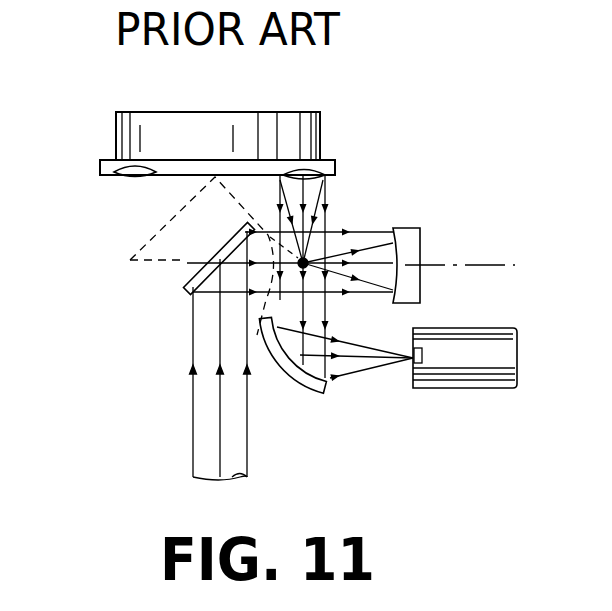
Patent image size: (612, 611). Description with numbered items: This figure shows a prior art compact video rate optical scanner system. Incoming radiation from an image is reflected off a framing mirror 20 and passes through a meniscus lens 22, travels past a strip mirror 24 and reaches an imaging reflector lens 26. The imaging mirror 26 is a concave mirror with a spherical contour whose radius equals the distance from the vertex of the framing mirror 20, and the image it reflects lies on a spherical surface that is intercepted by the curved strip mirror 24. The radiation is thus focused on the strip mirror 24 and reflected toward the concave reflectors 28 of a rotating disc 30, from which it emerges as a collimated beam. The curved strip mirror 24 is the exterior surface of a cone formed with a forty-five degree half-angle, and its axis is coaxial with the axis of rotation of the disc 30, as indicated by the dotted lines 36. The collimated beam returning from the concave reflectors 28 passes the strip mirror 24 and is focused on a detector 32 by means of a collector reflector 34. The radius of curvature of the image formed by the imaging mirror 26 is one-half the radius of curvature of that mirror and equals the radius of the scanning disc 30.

The framing mirror 20 is at (188, 290).
The meniscus lens 22 is at (268, 298).
The strip mirror 24 is at (318, 250).
The imaging reflector lens 26 is at (420, 238).
The concave reflectors 28 is at (132, 170).
The rotating disc 30 is at (335, 161).
The detector 32 is at (478, 388).
The collector reflector 34 is at (322, 390).
The dotted lines 36 is at (160, 227).